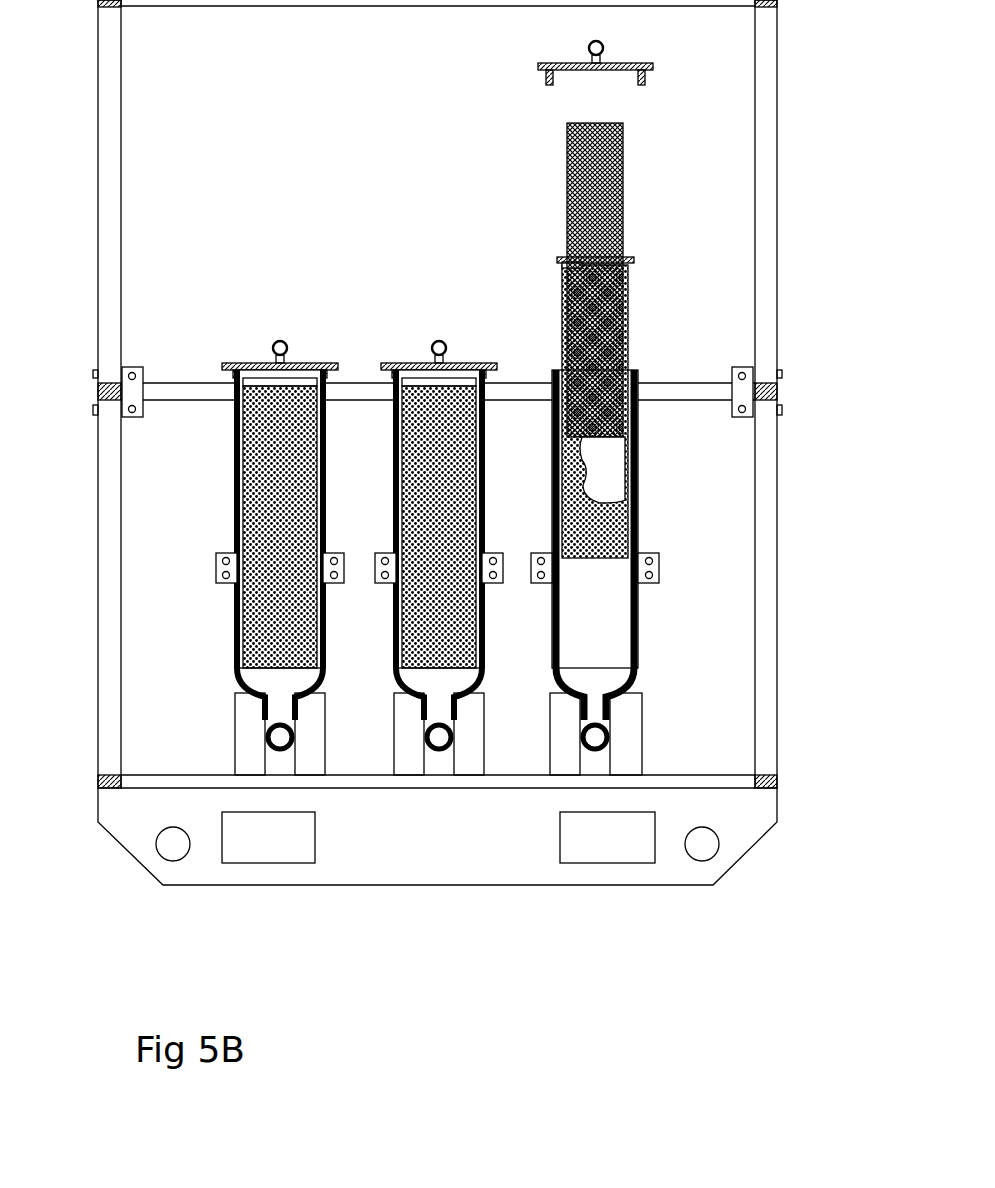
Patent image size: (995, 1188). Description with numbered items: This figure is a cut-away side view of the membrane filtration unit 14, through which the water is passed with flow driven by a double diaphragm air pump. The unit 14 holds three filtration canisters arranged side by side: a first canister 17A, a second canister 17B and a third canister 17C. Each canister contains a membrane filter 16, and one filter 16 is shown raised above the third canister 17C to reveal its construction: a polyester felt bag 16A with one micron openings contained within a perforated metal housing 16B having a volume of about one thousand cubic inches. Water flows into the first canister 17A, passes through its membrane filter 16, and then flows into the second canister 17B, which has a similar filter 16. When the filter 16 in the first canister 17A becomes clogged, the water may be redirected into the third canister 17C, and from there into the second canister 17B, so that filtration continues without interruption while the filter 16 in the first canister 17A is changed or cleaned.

The membrane filtration unit 14 is at (795, 690).
The membrane filter 16 is at (564, 340).
The polyester felt bag 16A is at (623, 180).
The perforated metal housing 16B is at (563, 323).
The first canister 17A is at (237, 493).
The second canister 17B is at (393, 452).
The third canister 17C is at (636, 478).